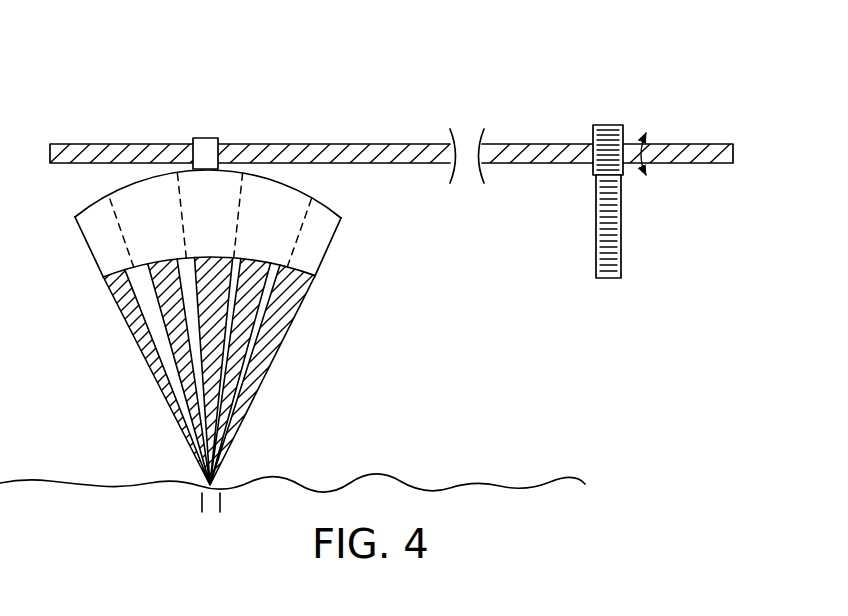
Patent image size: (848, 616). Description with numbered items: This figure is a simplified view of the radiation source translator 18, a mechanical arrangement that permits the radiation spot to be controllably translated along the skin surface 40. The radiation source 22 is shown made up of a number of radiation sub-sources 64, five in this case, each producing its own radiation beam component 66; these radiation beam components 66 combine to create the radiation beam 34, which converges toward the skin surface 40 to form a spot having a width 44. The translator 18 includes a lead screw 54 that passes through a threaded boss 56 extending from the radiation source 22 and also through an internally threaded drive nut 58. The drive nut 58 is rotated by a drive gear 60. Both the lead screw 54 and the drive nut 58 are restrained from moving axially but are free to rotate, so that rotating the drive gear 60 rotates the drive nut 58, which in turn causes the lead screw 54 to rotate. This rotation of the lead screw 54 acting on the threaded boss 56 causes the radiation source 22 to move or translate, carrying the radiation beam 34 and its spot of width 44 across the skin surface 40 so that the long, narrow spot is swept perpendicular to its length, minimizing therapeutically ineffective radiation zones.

The radiation source translator 18 is at (541, 72).
The radiation source 22 is at (254, 243).
The radiation beam 34 is at (284, 371).
The skin surface 40 is at (433, 488).
The width 44 is at (165, 502).
The lead screw 54 is at (320, 149).
The threaded boss 56 is at (204, 138).
The drive nut 58 is at (609, 125).
The drive gear 60 is at (621, 253).
The radiation sub-sources 64 is at (278, 242).
The radiation beam component 66 is at (243, 332).